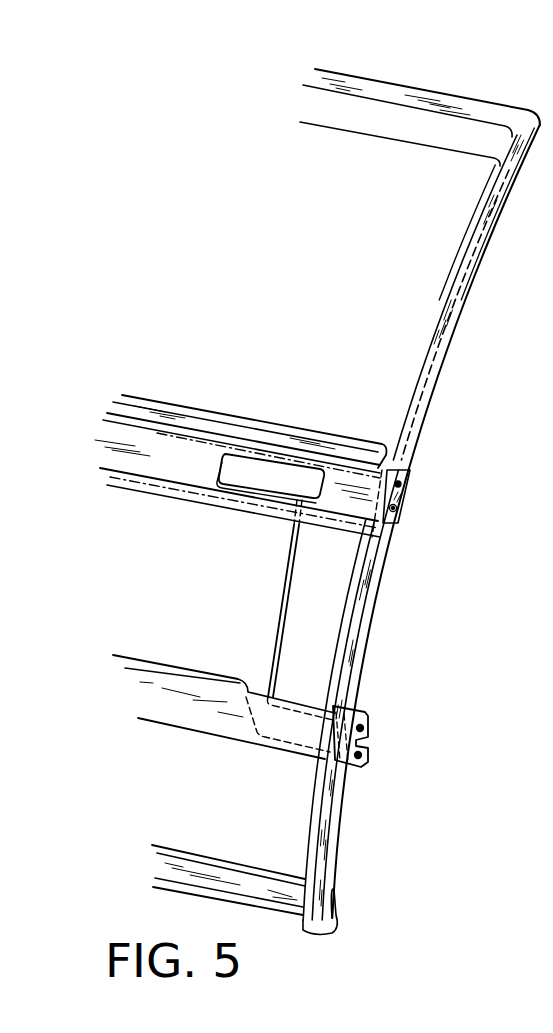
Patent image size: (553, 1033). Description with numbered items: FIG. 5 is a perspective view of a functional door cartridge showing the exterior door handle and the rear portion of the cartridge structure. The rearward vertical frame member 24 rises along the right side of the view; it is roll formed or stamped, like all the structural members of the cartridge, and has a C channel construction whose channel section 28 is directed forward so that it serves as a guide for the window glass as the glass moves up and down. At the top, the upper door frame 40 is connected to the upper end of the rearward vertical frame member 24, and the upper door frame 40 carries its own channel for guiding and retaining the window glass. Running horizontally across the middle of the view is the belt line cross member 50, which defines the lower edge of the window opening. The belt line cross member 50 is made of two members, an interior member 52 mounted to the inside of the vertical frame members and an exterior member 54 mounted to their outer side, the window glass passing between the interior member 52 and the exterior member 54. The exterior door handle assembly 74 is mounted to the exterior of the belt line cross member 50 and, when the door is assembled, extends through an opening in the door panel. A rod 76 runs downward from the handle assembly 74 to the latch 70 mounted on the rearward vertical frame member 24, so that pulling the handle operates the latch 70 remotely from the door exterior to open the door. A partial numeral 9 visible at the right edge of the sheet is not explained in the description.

The upper door frame 40 is at (465, 322).
The rearward vertical frame member 24 is at (382, 588).
The belt line cross member 50 is at (208, 407).
The interior member 52 is at (265, 420).
The exterior member 54 is at (215, 495).
The exterior door handle assembly 74 is at (220, 470).
The rod 76 is at (284, 571).
The latch 70 is at (368, 730).
The channel section 28 is at (284, 820).
The partial numeral (cut off) 9 is at (544, 530).